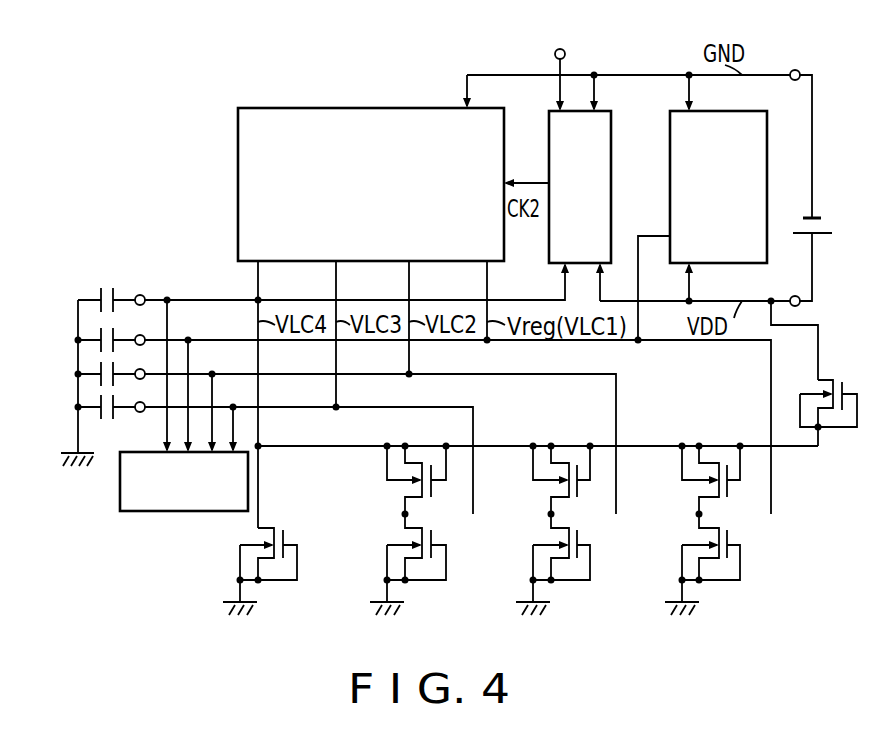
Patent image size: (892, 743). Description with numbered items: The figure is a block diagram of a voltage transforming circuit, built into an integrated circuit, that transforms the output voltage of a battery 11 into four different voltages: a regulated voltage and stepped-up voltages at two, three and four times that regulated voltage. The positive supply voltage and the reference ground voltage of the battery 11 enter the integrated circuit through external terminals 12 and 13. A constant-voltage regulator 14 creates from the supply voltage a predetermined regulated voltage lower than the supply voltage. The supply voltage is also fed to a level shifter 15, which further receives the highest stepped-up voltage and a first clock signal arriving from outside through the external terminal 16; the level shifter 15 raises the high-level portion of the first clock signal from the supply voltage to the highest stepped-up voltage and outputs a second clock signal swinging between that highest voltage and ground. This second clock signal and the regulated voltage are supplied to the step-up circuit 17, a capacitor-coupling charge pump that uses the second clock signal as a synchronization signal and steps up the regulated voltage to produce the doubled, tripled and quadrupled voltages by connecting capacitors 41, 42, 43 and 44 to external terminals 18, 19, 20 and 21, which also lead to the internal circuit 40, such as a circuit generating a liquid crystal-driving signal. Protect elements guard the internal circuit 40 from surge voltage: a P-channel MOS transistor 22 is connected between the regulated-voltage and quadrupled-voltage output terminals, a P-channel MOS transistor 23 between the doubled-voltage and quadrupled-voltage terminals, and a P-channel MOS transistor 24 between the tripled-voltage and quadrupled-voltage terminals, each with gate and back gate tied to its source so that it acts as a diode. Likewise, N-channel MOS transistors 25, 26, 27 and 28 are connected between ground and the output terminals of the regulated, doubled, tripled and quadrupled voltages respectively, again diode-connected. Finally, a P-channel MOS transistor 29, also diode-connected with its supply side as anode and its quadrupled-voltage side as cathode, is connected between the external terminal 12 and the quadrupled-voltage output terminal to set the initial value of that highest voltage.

The battery 11 is at (803, 238).
The external terminal 12 is at (800, 304).
The external terminal 13 is at (794, 70).
The constant-voltage regulator 14 is at (767, 158).
The level shifter 15 is at (611, 160).
The external terminal 16 is at (566, 55).
The step-up circuit 17 is at (363, 108).
The external terminal 18 is at (145, 297).
The external terminal 19 is at (155, 318).
The external terminal 20 is at (155, 352).
The external terminal 21 is at (155, 386).
The P-channel MOS transistor 22 is at (727, 490).
The P-channel MOS transistor 23 is at (545, 487).
The P-channel MOS transistor 24 is at (400, 485).
The N-channel MOS transistor 25 is at (745, 557).
The N-channel MOS transistor 26 is at (530, 549).
The N-channel MOS transistor 27 is at (385, 549).
The N-channel MOS transistor 28 is at (268, 527).
The P-channel MOS transistor 29 is at (806, 384).
The internal circuit 40 is at (120, 490).
The capacitor 41 is at (99, 289).
The capacitor 42 is at (95, 332).
The capacitor 43 is at (95, 366).
The capacitor 44 is at (95, 399).